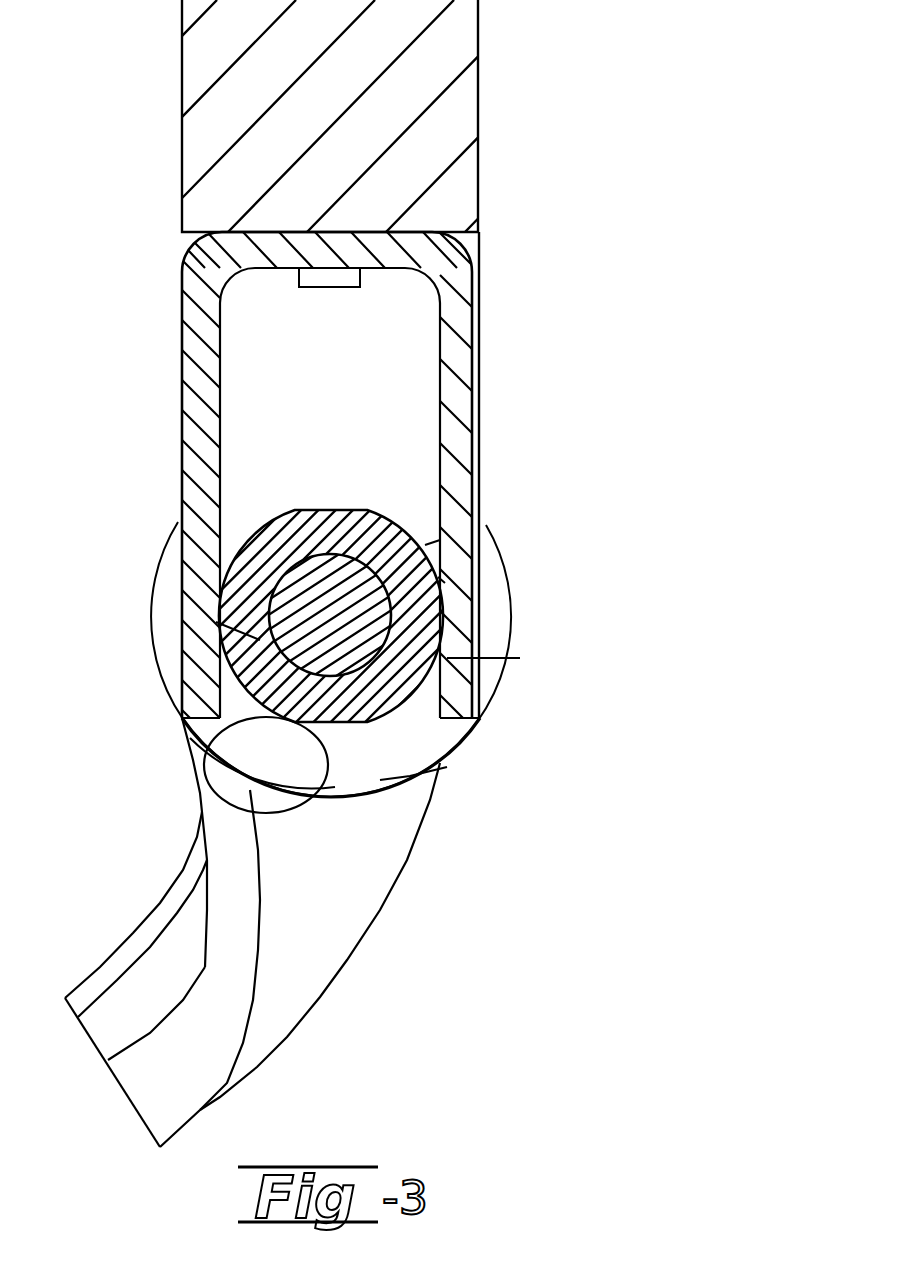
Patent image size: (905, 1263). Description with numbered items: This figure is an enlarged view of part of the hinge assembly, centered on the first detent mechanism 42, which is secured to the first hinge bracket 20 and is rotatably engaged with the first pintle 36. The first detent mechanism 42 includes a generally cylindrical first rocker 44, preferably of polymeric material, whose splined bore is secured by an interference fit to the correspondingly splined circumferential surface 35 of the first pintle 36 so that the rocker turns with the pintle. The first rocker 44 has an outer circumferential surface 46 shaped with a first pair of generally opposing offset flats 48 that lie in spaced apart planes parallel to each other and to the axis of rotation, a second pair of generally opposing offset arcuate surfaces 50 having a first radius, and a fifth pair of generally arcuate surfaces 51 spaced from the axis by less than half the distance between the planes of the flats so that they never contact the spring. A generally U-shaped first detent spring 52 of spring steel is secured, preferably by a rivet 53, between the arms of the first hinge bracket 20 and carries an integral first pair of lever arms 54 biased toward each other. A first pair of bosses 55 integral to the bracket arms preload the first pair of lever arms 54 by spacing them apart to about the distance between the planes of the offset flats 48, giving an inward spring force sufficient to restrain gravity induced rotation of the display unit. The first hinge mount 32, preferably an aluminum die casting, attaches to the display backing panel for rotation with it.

The first hinge bracket 20 is at (480, 18).
The first hinge mount 32 is at (322, 998).
The splined circumferential surface 35 is at (520, 658).
The first pintle 36 is at (216, 622).
The first detent mechanism 42 is at (480, 392).
The first rocker 44 is at (178, 522).
The first or outer circumferential surface 46 is at (325, 563).
The first pair of generally opposing offset flats 48 is at (323, 512).
The second pair of generally opposing offset arcuate surfaces 50 is at (283, 510).
The fifth pair of generally arcuate surfaces 51 is at (372, 516).
The first detent spring 52 is at (470, 242).
The rivet 53 is at (327, 288).
The first pair of lever arms 54 is at (215, 420).
The first pair of bosses 55 is at (425, 545).